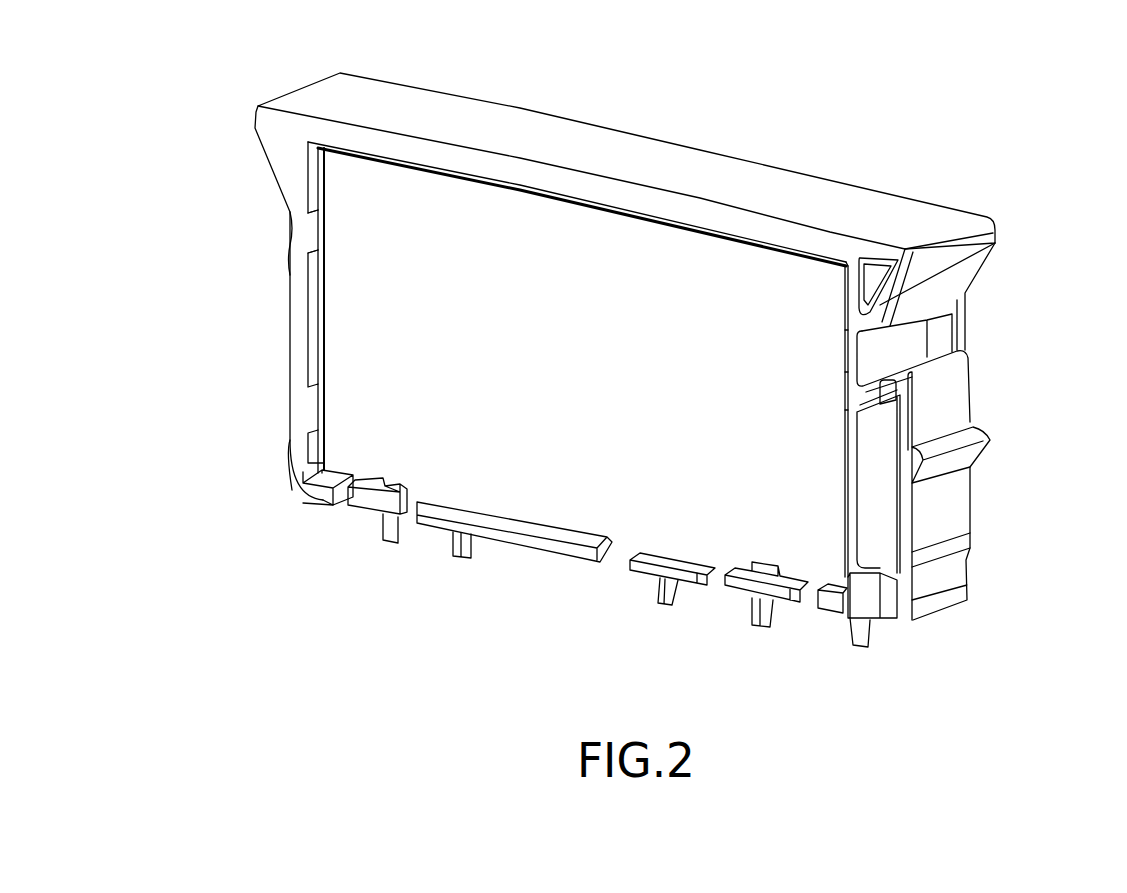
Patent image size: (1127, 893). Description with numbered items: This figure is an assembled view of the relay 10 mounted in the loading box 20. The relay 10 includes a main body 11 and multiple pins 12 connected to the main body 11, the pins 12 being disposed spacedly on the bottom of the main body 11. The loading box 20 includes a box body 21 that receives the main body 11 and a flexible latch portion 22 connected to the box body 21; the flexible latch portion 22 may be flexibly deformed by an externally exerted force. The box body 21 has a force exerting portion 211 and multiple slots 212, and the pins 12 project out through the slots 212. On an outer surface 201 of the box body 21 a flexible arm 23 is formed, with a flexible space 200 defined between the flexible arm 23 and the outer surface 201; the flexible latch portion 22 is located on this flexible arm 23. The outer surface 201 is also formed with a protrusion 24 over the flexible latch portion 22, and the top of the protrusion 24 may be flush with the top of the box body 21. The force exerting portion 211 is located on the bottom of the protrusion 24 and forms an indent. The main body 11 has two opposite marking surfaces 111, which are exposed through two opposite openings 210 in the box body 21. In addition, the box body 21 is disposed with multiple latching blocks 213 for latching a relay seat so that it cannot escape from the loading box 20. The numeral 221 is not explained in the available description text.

The relay 10 is at (510, 410).
The main body 11 is at (570, 487).
The pins 12 is at (462, 558).
The marking surfaces 111 is at (368, 407).
The loading box 20 is at (626, 360).
The box body 21 is at (813, 193).
The flexible latch portion 22 is at (892, 525).
The flexible arm 23 is at (940, 525).
The protrusion 24 is at (963, 258).
The flexible space 200 is at (877, 530).
The outer surface 201 is at (875, 497).
The openings 210 is at (317, 353).
The force exerting portion 211 is at (903, 338).
The slots 212 is at (412, 520).
The latching blocks 213 is at (317, 230).
The protrusion 221 is at (940, 467).